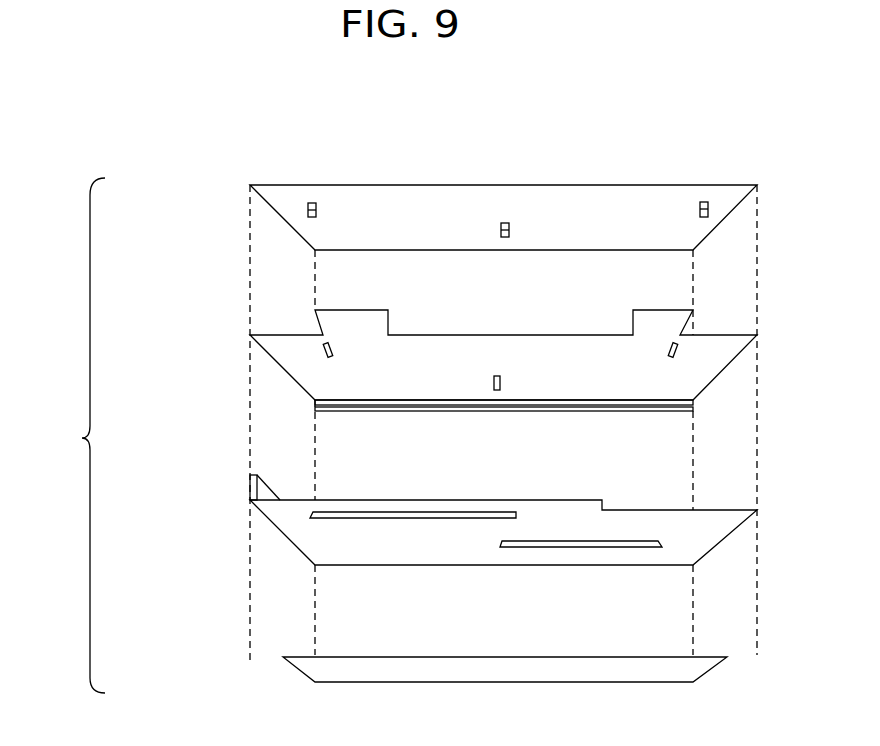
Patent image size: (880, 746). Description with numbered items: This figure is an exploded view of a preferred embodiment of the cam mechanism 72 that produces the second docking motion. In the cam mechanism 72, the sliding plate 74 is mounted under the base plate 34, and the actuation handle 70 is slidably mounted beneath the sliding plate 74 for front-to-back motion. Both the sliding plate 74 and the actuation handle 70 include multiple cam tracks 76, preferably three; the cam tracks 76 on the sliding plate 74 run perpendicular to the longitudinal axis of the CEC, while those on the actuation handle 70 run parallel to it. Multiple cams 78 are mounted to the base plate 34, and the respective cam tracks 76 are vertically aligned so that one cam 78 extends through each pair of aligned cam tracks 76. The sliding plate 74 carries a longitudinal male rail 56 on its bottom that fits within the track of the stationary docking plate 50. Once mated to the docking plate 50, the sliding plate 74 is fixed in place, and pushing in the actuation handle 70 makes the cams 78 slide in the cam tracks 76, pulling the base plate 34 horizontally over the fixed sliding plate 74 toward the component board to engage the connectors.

The base plate 34 is at (290, 222).
The docking base 50 is at (298, 669).
The rail 56 is at (387, 411).
The actuation handle 70 is at (284, 537).
The cam mechanism 72 is at (61, 435).
The sliding plate 74 is at (290, 376).
The cam tracks 76 is at (508, 512).
The cams 78 is at (509, 230).